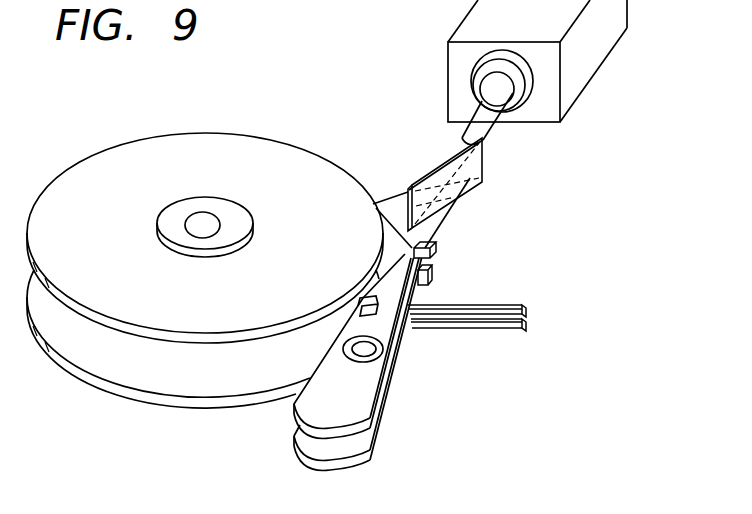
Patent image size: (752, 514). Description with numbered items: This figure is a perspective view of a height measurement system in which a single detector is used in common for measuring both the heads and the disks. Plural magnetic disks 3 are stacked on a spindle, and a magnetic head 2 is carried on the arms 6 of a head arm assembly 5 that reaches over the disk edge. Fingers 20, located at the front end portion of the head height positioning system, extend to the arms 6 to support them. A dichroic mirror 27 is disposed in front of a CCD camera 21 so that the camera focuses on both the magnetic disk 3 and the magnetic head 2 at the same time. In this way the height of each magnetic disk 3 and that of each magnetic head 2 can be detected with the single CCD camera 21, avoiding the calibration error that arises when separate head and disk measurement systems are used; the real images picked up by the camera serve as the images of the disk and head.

The magnetic head 2 is at (431, 247).
The magnetic disk 3 is at (312, 170).
The head arm assembly 5 is at (382, 342).
The arm 6 is at (380, 368).
The finger 20 is at (512, 308).
The CCD camera 21 is at (552, 97).
The dichroic mirror 27 is at (487, 172).